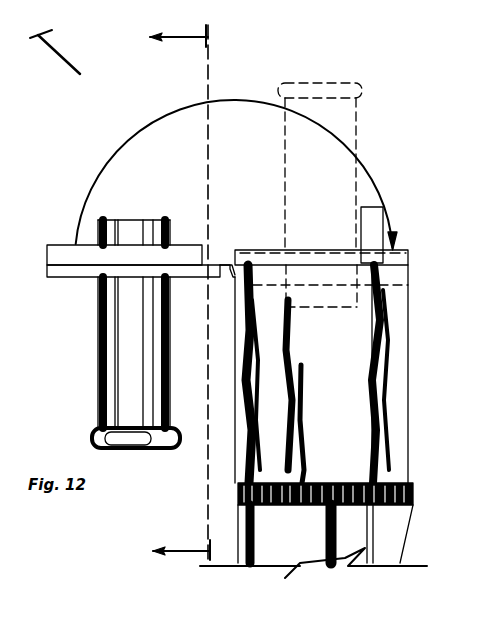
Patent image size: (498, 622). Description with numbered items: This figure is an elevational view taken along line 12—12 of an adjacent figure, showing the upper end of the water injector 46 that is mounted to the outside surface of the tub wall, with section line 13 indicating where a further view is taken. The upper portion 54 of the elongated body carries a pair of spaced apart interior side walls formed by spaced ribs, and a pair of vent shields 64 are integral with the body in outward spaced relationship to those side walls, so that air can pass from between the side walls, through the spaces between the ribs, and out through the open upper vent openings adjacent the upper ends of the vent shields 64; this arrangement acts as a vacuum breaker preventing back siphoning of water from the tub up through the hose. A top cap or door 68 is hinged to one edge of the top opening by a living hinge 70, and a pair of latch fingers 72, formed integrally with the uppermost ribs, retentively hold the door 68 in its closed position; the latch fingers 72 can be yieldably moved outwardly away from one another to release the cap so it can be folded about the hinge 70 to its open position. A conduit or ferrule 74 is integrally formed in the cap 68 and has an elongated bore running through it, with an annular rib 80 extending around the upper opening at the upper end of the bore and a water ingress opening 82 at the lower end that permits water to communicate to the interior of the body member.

The section line 12 is at (213, 140).
The section line 13 is at (178, 286).
The water injector 46 is at (0, 92).
The upper portion 54 is at (410, 335).
The vent shields 64 is at (388, 322).
The top cap or door 68 is at (68, 276).
The living hinge 70 is at (227, 264).
The latch fingers 72 is at (372, 213).
The conduit or ferrule 74 is at (284, 163).
The annular rib 80 is at (131, 438).
The water ingress opening 82 is at (122, 221).